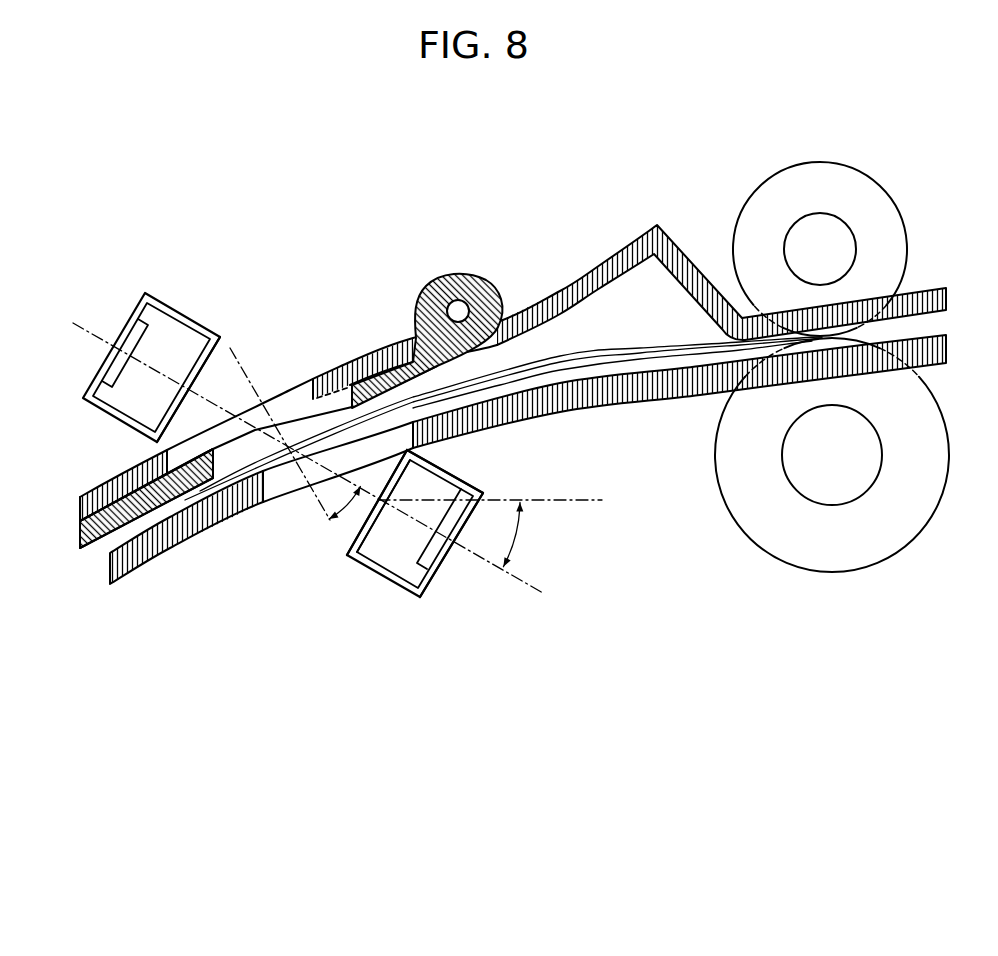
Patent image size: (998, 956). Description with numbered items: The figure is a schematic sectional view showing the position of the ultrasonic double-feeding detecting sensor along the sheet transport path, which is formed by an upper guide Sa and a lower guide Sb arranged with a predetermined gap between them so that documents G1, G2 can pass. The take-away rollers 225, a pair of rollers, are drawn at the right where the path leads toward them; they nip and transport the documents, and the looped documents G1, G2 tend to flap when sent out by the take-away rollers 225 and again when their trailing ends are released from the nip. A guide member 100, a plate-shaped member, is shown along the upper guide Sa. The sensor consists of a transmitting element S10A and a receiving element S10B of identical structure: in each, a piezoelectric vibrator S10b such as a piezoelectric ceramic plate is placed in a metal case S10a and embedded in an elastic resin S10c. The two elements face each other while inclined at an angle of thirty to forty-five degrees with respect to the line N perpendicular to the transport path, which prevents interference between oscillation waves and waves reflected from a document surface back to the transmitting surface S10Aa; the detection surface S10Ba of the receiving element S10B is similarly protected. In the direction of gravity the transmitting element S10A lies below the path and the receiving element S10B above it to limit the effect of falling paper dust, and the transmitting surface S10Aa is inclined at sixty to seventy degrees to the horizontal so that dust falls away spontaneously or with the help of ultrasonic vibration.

The receiving element S10B is at (138, 286).
The detection surface of first sensor S10Ba is at (200, 383).
The guide member 100 is at (416, 330).
The line N- N is at (280, 436).
The upper guide Sa is at (553, 300).
The document G1 is at (648, 350).
The take-away rollers 225 is at (720, 240).
The piezoelectric vibrator S10b is at (470, 483).
The document G2 is at (625, 360).
The lower guide Sb is at (592, 397).
The transmitting surface S10Aa is at (349, 538).
The elastic resin S10c is at (397, 547).
The metal case S10a is at (433, 573).
The transmitting element S10A is at (414, 606).